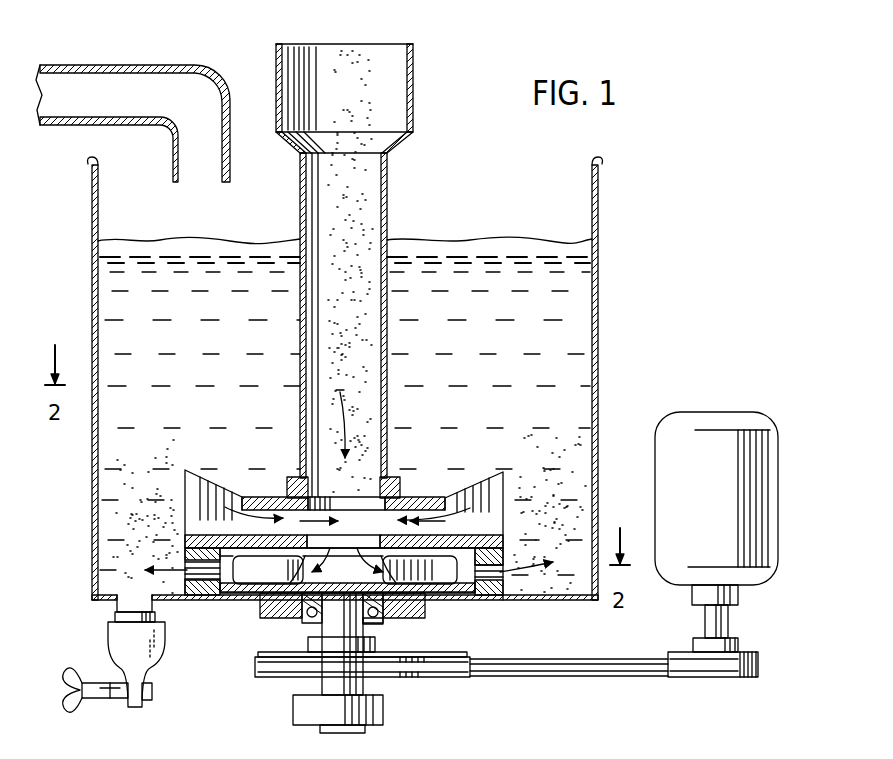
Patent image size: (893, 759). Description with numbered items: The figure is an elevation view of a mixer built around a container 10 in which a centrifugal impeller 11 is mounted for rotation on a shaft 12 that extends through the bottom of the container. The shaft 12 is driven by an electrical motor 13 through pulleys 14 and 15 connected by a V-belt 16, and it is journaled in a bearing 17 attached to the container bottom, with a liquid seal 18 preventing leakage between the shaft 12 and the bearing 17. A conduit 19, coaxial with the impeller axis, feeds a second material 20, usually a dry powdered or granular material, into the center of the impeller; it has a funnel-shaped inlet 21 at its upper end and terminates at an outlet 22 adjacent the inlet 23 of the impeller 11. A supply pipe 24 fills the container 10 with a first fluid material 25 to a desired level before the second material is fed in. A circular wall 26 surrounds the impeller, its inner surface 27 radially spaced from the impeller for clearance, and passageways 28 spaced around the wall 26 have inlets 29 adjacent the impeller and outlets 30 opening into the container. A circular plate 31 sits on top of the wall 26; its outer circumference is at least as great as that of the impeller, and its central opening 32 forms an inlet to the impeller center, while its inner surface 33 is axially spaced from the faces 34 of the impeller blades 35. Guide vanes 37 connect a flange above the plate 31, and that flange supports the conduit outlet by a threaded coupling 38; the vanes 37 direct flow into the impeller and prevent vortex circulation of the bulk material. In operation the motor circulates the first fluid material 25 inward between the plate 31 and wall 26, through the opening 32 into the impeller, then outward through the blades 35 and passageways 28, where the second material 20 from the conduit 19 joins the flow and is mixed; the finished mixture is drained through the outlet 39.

The container 10 is at (599, 288).
The centrifugal impeller 11 is at (442, 599).
The shaft 12 is at (350, 631).
The electrical motor 13 is at (760, 510).
The pulley 14 is at (720, 679).
The pulley 15 is at (411, 678).
The V-belt 16 is at (558, 678).
The bearing 17 is at (377, 622).
The liquid seal 18 is at (361, 605).
The conduit 19 is at (388, 210).
The second material 20 is at (316, 33).
The funnel-shaped inlet 21 is at (416, 87).
The outlet 22 is at (322, 511).
The inlet 23 is at (355, 558).
The supply pipe 24 is at (164, 67).
The first fluid material 25 is at (478, 268).
The circular wall 26 is at (500, 554).
The inner surface 27 is at (268, 570).
The passageways 28 is at (476, 588).
The inlets 29 is at (464, 549).
The outlets 30 is at (503, 584).
The circular plate 31 is at (196, 541).
The central opening 32 is at (386, 530).
The inner surface 33 is at (281, 571).
The faces 34 is at (255, 557).
The impeller blades 35 is at (262, 604).
The guide vanes 37 is at (203, 487).
The threaded coupling 38 is at (392, 481).
The outlet 39 is at (117, 616).